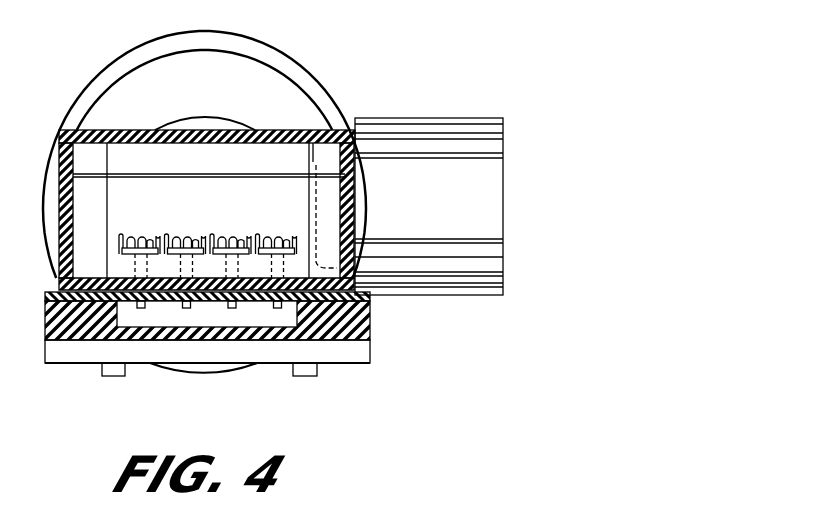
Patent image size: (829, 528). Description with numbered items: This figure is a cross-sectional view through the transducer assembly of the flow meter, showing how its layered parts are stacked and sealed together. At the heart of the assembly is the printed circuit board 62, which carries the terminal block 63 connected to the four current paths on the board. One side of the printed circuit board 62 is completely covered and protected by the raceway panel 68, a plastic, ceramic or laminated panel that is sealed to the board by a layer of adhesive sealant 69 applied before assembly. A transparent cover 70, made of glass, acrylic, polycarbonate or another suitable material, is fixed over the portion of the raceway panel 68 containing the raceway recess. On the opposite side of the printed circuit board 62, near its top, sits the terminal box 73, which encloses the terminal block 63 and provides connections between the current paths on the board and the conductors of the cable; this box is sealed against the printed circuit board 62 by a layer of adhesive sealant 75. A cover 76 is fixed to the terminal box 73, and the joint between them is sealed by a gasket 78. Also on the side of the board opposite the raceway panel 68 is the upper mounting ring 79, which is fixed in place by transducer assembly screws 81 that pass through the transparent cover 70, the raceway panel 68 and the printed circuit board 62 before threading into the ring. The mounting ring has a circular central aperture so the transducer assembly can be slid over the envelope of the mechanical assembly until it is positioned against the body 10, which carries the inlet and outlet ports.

The body 10 is at (346, 129).
The printed circuit board 62 is at (372, 294).
The terminal block 63 is at (248, 237).
The raceway panel 68 is at (372, 345).
The adhesive sealant 69 is at (372, 318).
The transparent cover 70 is at (372, 364).
The terminal box 73 is at (358, 208).
The adhesive sealant 75 is at (360, 280).
The cover 76 is at (357, 140).
The gasket 78 is at (356, 178).
The upper mounting ring 79 is at (262, 63).
The transducer assembly screws 81 is at (118, 377).